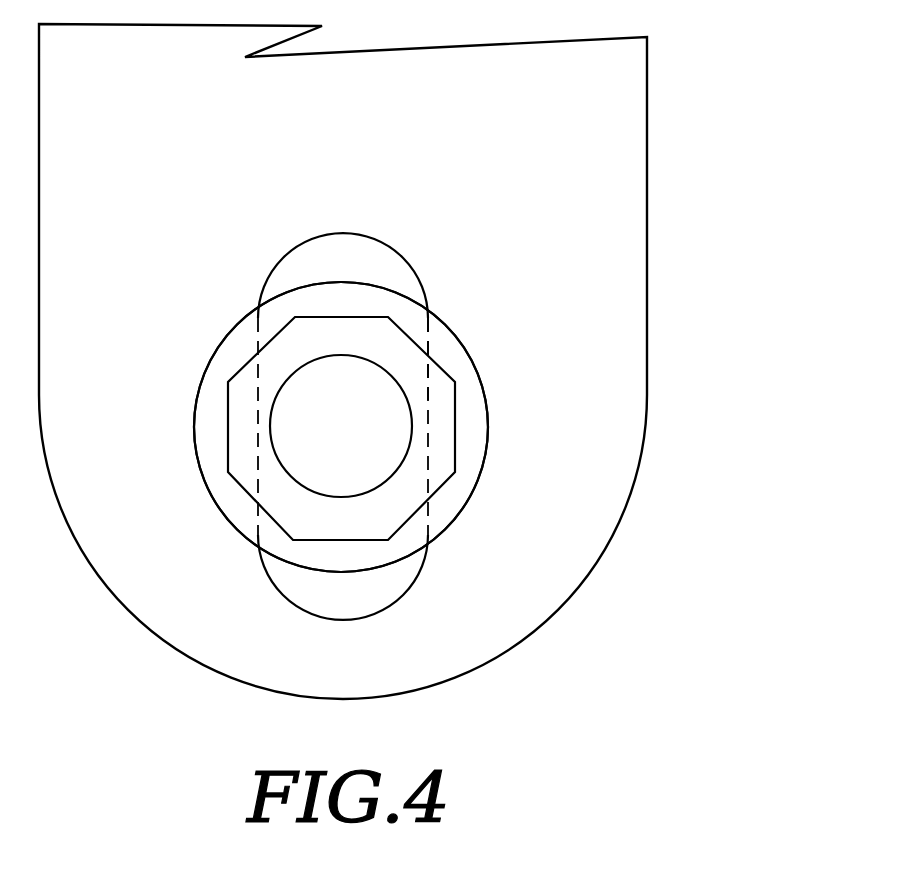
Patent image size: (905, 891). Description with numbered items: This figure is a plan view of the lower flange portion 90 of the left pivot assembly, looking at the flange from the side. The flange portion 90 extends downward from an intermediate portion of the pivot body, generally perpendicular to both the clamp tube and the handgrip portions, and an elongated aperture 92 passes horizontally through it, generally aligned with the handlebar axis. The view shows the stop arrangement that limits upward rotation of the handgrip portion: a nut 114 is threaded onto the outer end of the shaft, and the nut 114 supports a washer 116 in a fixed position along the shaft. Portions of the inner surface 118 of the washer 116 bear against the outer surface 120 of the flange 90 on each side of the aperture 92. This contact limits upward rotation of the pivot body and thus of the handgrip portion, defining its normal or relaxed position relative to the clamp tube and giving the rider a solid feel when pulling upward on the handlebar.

The flange portion 90 is at (647, 232).
The elongated aperture 92 is at (392, 247).
The nut 114 is at (230, 418).
The washer 116 is at (225, 338).
The inner surface 118 is at (440, 333).
The outer surface 120 is at (473, 435).